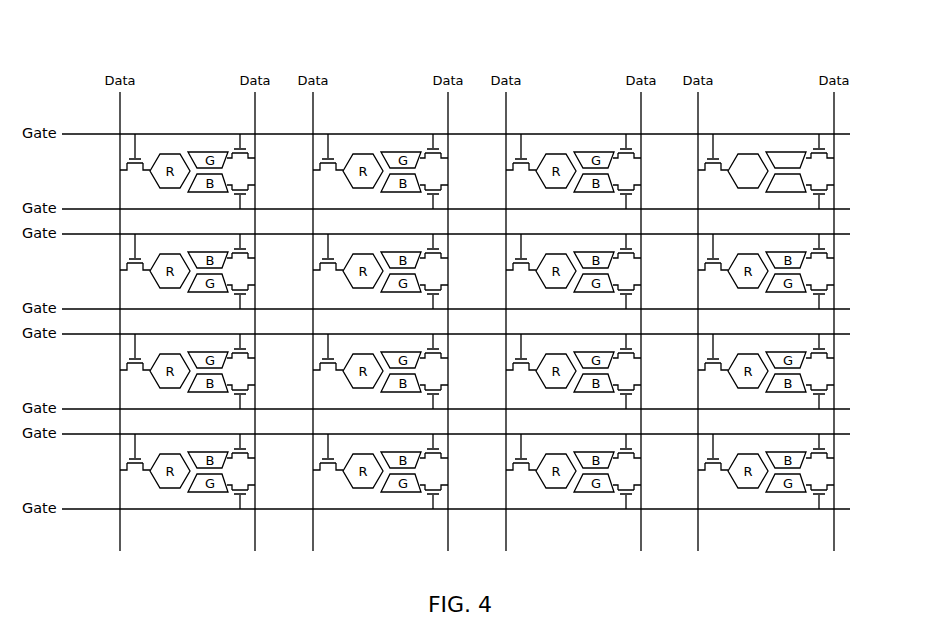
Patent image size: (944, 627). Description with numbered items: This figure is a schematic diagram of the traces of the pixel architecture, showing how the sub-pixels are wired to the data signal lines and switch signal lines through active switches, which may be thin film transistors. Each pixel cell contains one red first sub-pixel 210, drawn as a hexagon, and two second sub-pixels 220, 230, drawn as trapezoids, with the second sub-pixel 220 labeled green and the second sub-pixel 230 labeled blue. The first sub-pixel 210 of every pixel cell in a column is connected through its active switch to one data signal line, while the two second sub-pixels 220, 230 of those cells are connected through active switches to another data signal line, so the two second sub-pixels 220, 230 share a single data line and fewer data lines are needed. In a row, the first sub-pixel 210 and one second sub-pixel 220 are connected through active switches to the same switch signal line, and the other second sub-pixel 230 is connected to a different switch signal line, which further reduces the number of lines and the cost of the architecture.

The first sub-pixel 210 is at (745, 152).
The second sub-pixel 220 is at (780, 152).
The blue sub-pixel 230 is at (798, 180).